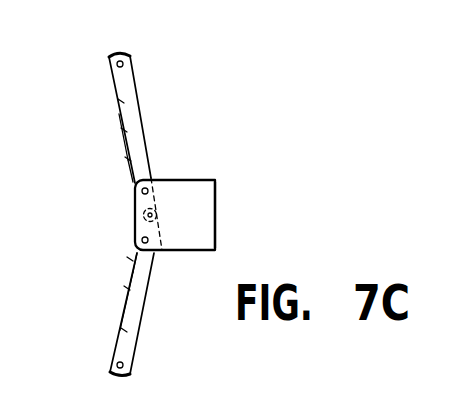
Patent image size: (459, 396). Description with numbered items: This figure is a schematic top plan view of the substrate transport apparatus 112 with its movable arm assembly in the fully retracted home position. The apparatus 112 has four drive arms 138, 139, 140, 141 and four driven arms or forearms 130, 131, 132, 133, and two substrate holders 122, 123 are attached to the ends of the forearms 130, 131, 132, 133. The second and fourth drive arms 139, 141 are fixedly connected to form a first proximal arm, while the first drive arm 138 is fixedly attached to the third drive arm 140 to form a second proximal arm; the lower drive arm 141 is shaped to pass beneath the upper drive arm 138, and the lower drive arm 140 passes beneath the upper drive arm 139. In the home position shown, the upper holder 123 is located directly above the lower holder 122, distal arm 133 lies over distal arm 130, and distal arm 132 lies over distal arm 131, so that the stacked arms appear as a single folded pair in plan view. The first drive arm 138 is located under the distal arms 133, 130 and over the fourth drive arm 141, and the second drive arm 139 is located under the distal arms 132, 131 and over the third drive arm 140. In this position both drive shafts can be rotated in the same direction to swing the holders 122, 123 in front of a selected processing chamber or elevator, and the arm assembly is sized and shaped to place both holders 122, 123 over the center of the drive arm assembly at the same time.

The transport apparatus 112 is at (212, 100).
The holder 122 is at (203, 190).
The holder 123 is at (200, 237).
The forearm 130 is at (120, 102).
The forearm 131 is at (124, 331).
The forearm 132 is at (127, 347).
The forearm 133 is at (138, 82).
The first drive arm 138 is at (124, 130).
The second drive arm 139 is at (126, 288).
The third drive arm 140 is at (130, 259).
The fourth drive arm 141 is at (128, 159).